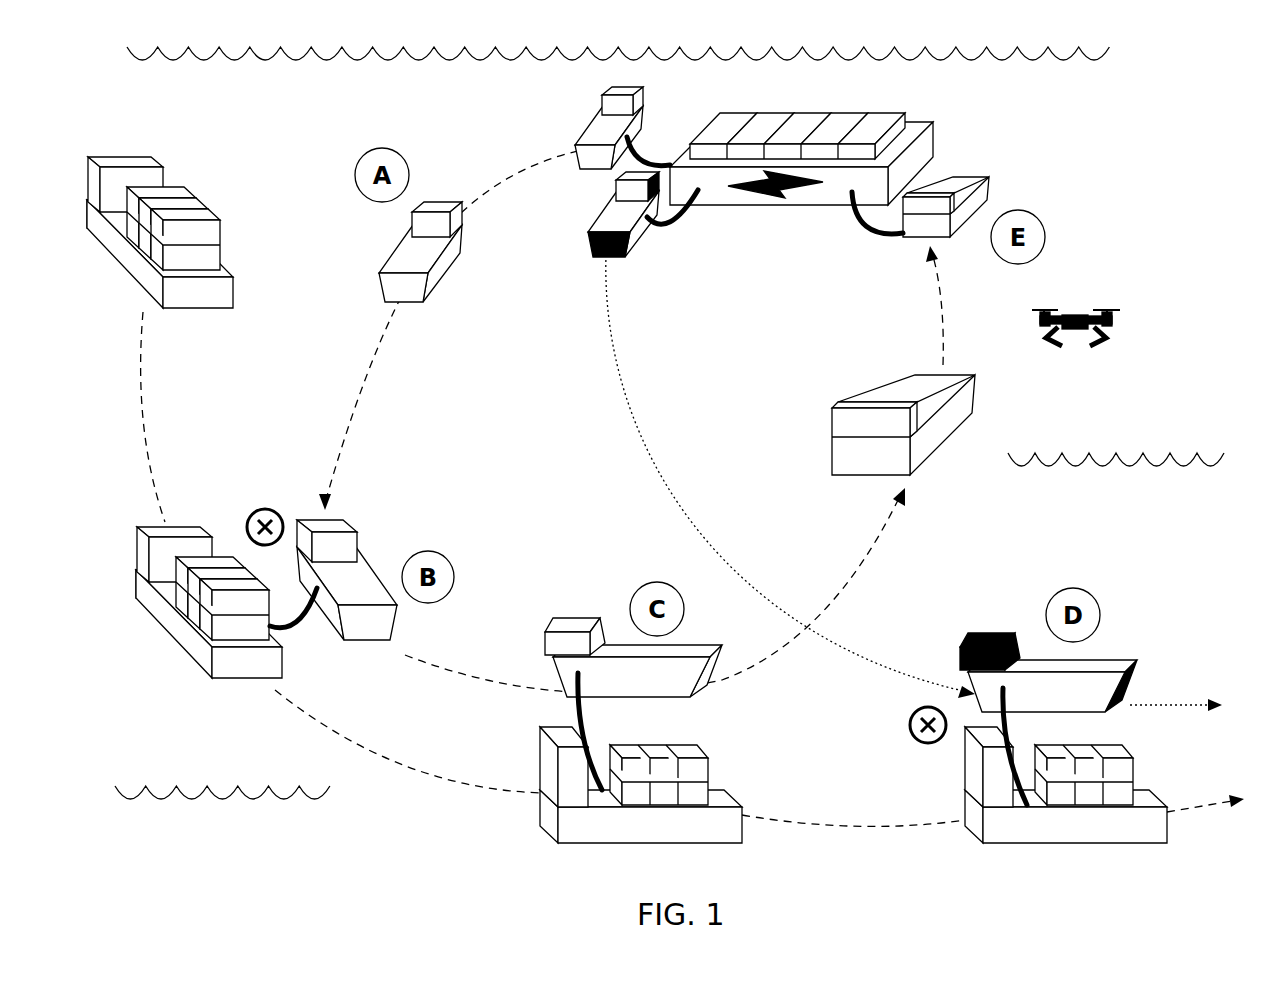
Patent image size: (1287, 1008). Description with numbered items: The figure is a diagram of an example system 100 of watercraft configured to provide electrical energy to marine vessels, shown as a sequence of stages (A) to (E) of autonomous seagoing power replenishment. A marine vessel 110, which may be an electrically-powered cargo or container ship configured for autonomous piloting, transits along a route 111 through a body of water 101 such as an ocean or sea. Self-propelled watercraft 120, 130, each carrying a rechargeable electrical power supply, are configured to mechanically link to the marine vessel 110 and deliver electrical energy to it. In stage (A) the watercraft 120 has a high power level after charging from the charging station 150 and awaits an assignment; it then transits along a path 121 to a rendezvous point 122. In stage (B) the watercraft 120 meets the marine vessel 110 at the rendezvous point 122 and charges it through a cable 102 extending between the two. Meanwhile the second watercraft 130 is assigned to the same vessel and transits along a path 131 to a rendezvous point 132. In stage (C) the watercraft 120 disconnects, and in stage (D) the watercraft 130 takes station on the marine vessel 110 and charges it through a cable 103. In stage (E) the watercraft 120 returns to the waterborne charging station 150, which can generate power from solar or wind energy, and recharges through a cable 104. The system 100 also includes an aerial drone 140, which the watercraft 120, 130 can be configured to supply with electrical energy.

The system 100 is at (1187, 124).
The body of water 101 is at (331, 47).
The cable 102 is at (305, 634).
The cable 103 is at (1018, 733).
The cable 104 is at (853, 227).
The marine vessel 110 is at (235, 294).
The route 111 is at (145, 438).
The watercraft 120 is at (643, 103).
The path 121 is at (347, 413).
The rendezvous point 122 is at (262, 508).
The watercraft 130 is at (593, 218).
The path 131 is at (625, 407).
The rendezvous point 132 is at (907, 723).
The aerial drone 140 is at (1117, 340).
The charging station 150 is at (935, 138).